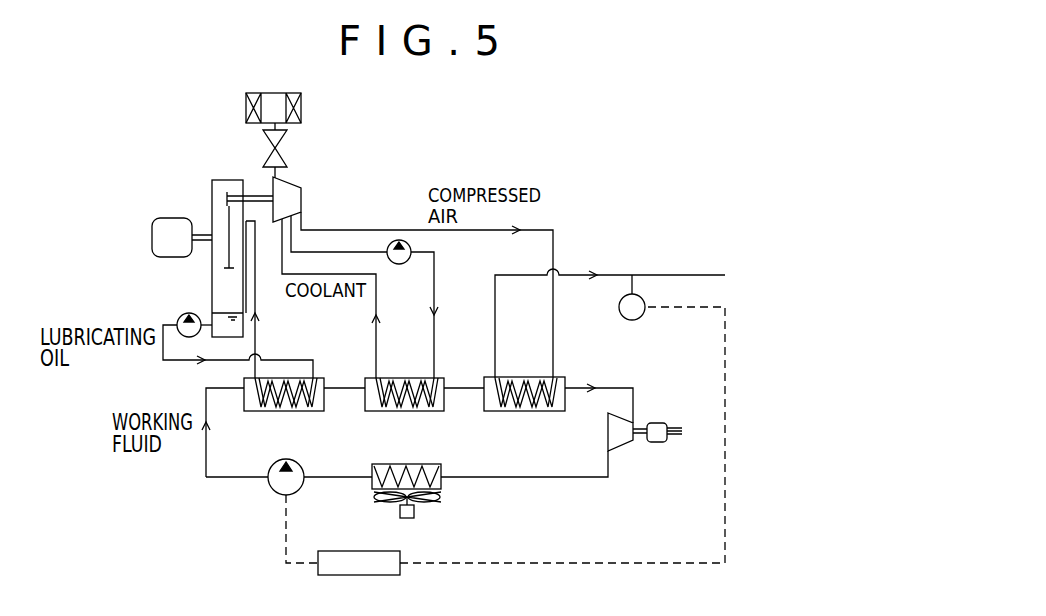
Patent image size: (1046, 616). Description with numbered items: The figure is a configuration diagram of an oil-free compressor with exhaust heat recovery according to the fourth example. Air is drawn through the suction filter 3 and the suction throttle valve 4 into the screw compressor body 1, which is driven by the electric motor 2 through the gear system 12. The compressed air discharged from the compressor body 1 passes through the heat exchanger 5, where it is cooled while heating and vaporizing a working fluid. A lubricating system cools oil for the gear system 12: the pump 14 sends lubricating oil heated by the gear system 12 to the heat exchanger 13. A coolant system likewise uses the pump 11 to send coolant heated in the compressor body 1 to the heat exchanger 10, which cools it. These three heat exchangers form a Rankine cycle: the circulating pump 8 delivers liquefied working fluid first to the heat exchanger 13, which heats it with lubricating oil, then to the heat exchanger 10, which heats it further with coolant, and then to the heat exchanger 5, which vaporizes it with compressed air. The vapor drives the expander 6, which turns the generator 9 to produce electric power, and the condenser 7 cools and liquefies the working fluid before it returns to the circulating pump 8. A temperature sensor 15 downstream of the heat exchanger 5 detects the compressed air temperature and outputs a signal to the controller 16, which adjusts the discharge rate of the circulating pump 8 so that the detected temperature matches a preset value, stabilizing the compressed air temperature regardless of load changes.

The compressor body 1 is at (301, 200).
The electric motor 2 is at (172, 217).
The suction filter 3 is at (301, 108).
The suction throttle valve 4 is at (287, 151).
The heat exchanger 5 is at (523, 411).
The expander 6 is at (625, 441).
The condenser 7 is at (427, 464).
The circulating pump 8 is at (291, 460).
The generator 9 is at (658, 443).
The heat exchanger 10 is at (375, 411).
The pump 11 is at (399, 264).
The gear system 12 is at (230, 180).
The heat exchanger 13 is at (254, 411).
The pump 14 is at (189, 313).
The temperature sensor 15 is at (632, 320).
The controller 16 is at (344, 551).